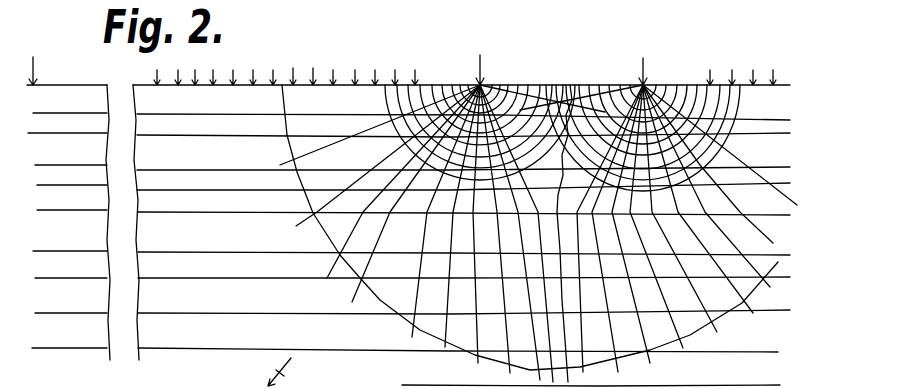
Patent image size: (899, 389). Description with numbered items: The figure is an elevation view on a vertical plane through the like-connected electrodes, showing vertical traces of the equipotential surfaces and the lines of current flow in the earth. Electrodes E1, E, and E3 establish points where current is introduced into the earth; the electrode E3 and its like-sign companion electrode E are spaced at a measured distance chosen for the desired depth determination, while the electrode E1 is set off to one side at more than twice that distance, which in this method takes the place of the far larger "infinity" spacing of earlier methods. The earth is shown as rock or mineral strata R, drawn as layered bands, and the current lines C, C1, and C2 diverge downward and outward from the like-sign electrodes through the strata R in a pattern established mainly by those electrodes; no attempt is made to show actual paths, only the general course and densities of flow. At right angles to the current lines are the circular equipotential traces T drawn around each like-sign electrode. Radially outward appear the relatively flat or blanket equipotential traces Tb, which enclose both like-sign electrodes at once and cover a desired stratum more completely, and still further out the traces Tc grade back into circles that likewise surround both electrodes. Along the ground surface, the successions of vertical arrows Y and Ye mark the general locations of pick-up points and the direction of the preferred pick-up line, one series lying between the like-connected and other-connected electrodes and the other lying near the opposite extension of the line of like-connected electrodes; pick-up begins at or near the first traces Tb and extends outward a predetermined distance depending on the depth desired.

The electrode E1 is at (47, 71).
The vertical arrows Y is at (317, 58).
The vertical arrows Ye is at (771, 82).
The electrode E is at (490, 65).
The circular equipotential traces T is at (514, 85).
The blanket equipotential surface traces Tb is at (573, 85).
The electrode E3 is at (643, 117).
The current line C is at (390, 165).
The current line C1 is at (390, 326).
The current line C2 is at (575, 333).
The equipotential traces Tc is at (416, 336).
The rock or mineral strata R is at (409, 235).